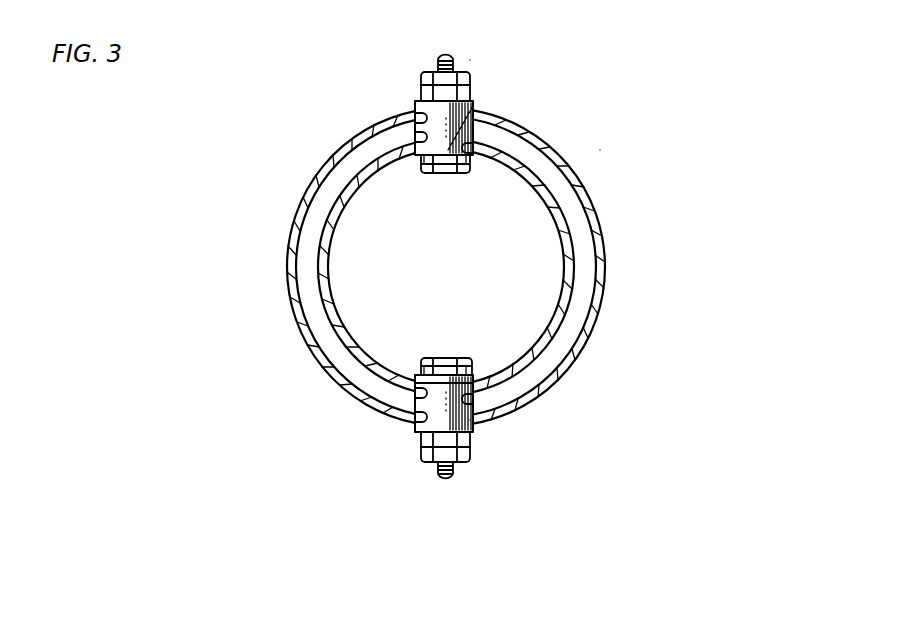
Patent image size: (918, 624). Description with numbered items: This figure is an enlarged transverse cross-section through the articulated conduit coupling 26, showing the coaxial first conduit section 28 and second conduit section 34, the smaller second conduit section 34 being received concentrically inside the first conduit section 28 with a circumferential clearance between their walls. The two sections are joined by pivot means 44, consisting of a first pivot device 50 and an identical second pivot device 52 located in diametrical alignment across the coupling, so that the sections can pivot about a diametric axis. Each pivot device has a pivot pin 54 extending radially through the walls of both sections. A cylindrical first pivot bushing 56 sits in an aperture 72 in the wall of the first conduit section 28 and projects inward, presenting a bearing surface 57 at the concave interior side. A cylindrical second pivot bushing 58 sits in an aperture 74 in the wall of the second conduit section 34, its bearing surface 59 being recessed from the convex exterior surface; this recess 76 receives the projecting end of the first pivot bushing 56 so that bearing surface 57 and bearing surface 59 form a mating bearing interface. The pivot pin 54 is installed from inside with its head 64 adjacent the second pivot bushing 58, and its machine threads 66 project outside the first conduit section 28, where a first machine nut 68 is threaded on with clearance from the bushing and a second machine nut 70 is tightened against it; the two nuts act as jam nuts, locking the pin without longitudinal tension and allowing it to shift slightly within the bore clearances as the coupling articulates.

The articulated conduit coupling 26 is at (659, 92).
The first conduit section 28 is at (602, 222).
The second conduit section 34 is at (290, 285).
The pivot means 44 is at (557, 86).
The first pivot device 50 is at (517, 85).
The second pivot device 52 is at (539, 420).
The pivot pin 54 is at (452, 54).
The first pivot bushing 56 is at (475, 103).
The bearing surface 57 is at (438, 176).
The second pivot bushing 58 is at (427, 154).
The bearing surface 59 is at (482, 119).
The head 64 is at (450, 175).
The machine threads 66 is at (437, 71).
The first machine nut 68 is at (421, 95).
The second machine nut 70 is at (421, 80).
The aperture 72 is at (415, 118).
The aperture 74 is at (415, 138).
The recess 76 is at (480, 149).